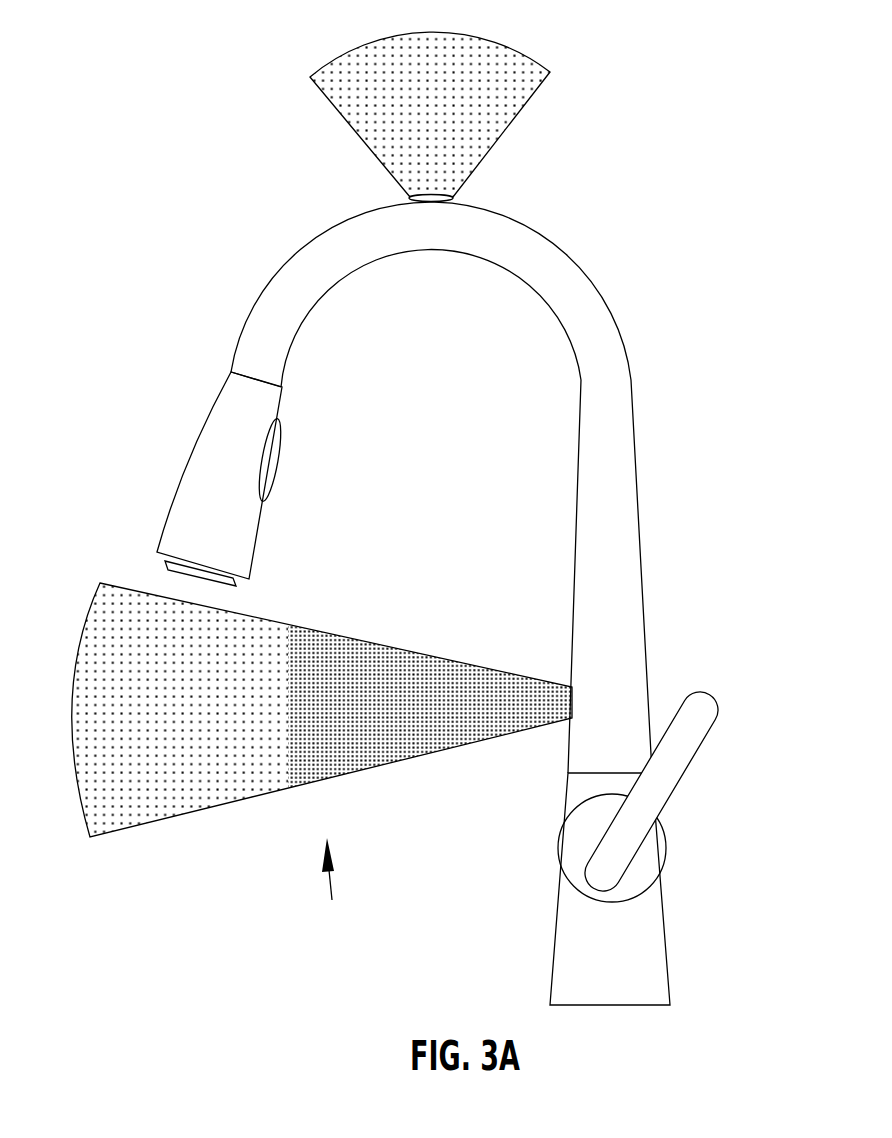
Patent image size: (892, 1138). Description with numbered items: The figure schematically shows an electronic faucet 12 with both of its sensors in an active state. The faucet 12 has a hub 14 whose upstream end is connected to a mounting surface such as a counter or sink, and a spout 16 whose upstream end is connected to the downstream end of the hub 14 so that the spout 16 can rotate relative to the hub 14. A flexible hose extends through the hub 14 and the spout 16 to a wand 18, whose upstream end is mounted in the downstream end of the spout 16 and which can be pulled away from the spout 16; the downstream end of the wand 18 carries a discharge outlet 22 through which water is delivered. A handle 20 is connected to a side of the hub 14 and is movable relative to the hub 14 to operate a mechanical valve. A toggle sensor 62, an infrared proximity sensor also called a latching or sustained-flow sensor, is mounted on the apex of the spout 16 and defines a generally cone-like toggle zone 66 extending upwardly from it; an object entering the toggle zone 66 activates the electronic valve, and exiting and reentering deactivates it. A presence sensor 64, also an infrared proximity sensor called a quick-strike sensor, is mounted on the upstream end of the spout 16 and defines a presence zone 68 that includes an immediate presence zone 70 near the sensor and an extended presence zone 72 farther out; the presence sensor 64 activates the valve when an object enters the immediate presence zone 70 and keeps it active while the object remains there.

The electronic faucet 12 is at (442, 503).
The hub 14 is at (670, 935).
The spout 16 is at (635, 405).
The wand 18 is at (193, 457).
The handle 20 is at (688, 763).
The discharge outlet 22 is at (208, 581).
The toggle sensor 62 is at (433, 200).
The presence sensor 64 is at (572, 698).
The toggle zone 66 is at (500, 47).
The presence zone 68 is at (331, 883).
The immediate presence zone 70 is at (443, 750).
The extended presence zone 72 is at (205, 810).